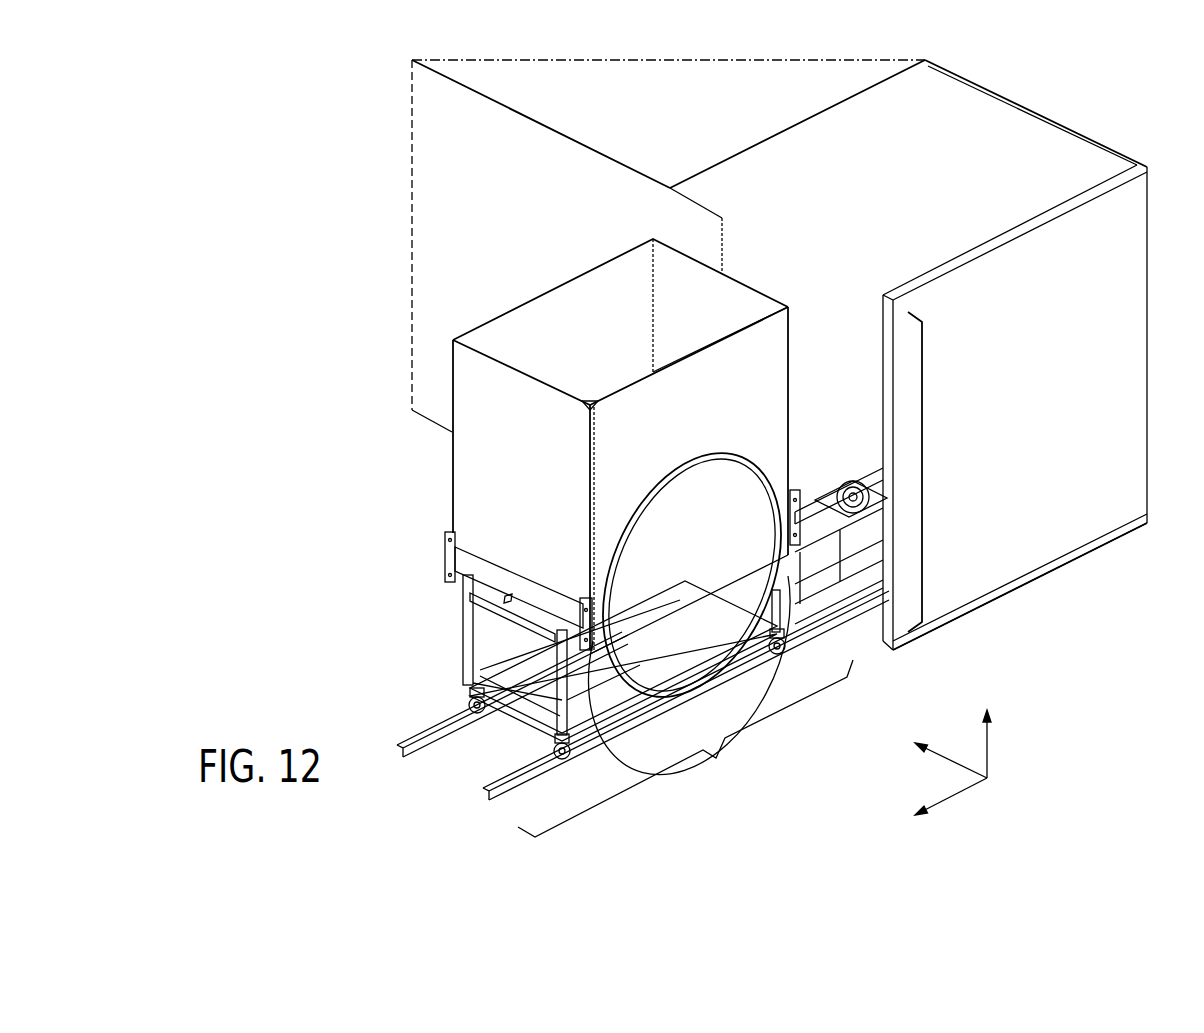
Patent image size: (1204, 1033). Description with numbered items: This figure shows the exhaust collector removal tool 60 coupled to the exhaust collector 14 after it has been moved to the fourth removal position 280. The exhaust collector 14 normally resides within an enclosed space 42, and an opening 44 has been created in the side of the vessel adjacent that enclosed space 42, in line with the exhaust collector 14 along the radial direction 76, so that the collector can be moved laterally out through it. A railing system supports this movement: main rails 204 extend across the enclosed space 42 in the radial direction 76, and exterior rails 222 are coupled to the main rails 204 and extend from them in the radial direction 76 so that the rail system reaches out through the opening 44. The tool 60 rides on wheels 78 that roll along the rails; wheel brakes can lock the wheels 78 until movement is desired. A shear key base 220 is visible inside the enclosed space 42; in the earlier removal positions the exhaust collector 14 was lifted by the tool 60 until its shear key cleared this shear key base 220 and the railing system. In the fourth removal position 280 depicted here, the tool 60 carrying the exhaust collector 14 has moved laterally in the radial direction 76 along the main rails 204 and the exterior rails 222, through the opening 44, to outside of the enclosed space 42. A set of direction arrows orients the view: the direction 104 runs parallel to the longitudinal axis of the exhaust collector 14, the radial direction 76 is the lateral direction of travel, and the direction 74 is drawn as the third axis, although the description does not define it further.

The exhaust collector 14 is at (518, 342).
The enclosed space 42 is at (905, 185).
The opening 44 is at (934, 477).
The tool 60 is at (430, 556).
The wheels 78 is at (538, 745).
The main rails 204 is at (868, 628).
The shear key base 220 is at (858, 508).
The exterior rails 222 is at (685, 748).
The fourth removal position 280 is at (1098, 660).
The vertical direction 74 is at (989, 745).
The radial direction 76 is at (957, 797).
The direction 104 is at (943, 757).